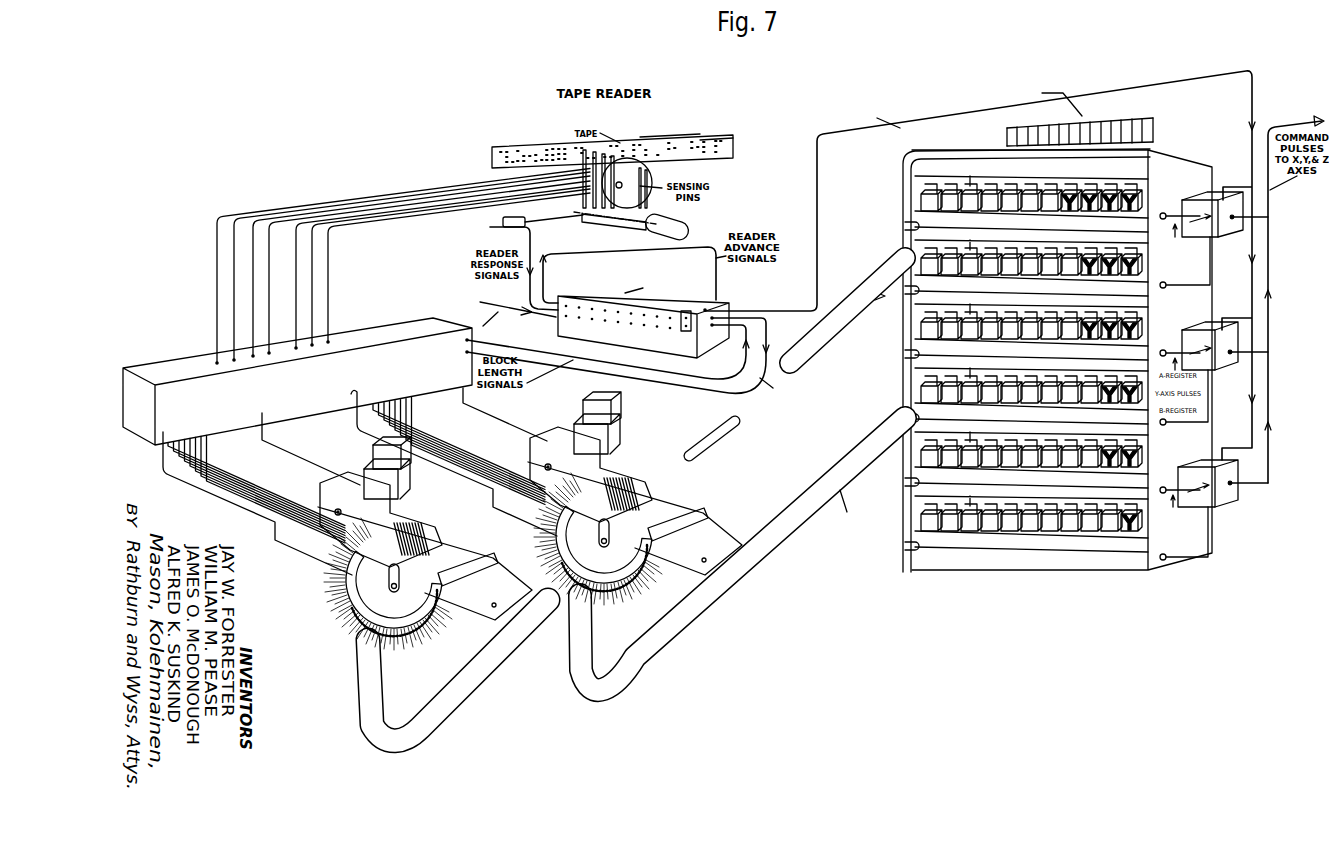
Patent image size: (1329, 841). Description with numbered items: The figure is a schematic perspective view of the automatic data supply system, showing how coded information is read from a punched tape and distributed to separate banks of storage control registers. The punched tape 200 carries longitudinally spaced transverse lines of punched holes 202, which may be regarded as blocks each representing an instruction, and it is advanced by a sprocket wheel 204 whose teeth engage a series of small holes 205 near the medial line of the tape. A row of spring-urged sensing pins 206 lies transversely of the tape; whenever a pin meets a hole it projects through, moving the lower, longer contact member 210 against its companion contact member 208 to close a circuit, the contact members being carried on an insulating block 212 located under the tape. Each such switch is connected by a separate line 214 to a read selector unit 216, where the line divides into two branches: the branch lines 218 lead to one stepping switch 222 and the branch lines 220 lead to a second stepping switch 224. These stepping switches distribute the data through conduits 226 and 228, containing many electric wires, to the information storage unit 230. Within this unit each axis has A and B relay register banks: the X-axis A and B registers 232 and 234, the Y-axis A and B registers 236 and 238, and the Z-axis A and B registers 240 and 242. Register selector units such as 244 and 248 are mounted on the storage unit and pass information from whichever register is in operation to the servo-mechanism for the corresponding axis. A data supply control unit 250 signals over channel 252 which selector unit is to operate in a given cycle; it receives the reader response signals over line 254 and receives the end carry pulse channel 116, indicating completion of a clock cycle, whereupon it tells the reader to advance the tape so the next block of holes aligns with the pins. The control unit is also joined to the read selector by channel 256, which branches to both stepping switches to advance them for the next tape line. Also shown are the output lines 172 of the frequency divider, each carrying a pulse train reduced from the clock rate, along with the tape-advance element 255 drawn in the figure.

The end carry pulse channel 116 is at (497, 306).
The output lines 172 is at (1103, 120).
The punched tape 200 is at (688, 136).
The punched holes 202 is at (634, 137).
The sprocket wheel 204 is at (633, 178).
The small holes 205 is at (678, 148).
The sensing pins 206 is at (578, 200).
The contact member 208 is at (586, 162).
The contact member 210 is at (583, 150).
The insulating block 212 is at (560, 166).
The line 214 is at (390, 220).
The read selector unit 216 is at (177, 362).
The branch lines 218 is at (252, 474).
The branch lines 220 is at (418, 441).
The stepping switch 222 is at (327, 586).
The stepping switch 224 is at (548, 536).
The conduit 226 is at (458, 700).
The conduit 228 is at (772, 567).
The information storage unit 230 is at (1203, 156).
The X-axis A register 232 is at (1143, 188).
The X-axis B register 234 is at (1105, 262).
The Y-axis A register 236 is at (1147, 321).
The Y-axis B register 238 is at (1028, 372).
The Z-axis A register 240 is at (1147, 450).
The Z-axis B register 242 is at (1100, 535).
The register selector unit 244 is at (1200, 202).
The register selector unit 248 is at (1202, 468).
The data supply control unit 250 is at (660, 344).
The channel 252 is at (817, 186).
The line 254 is at (538, 240).
The tape advance solenoid 255 is at (634, 253).
The channel 256 is at (647, 390).